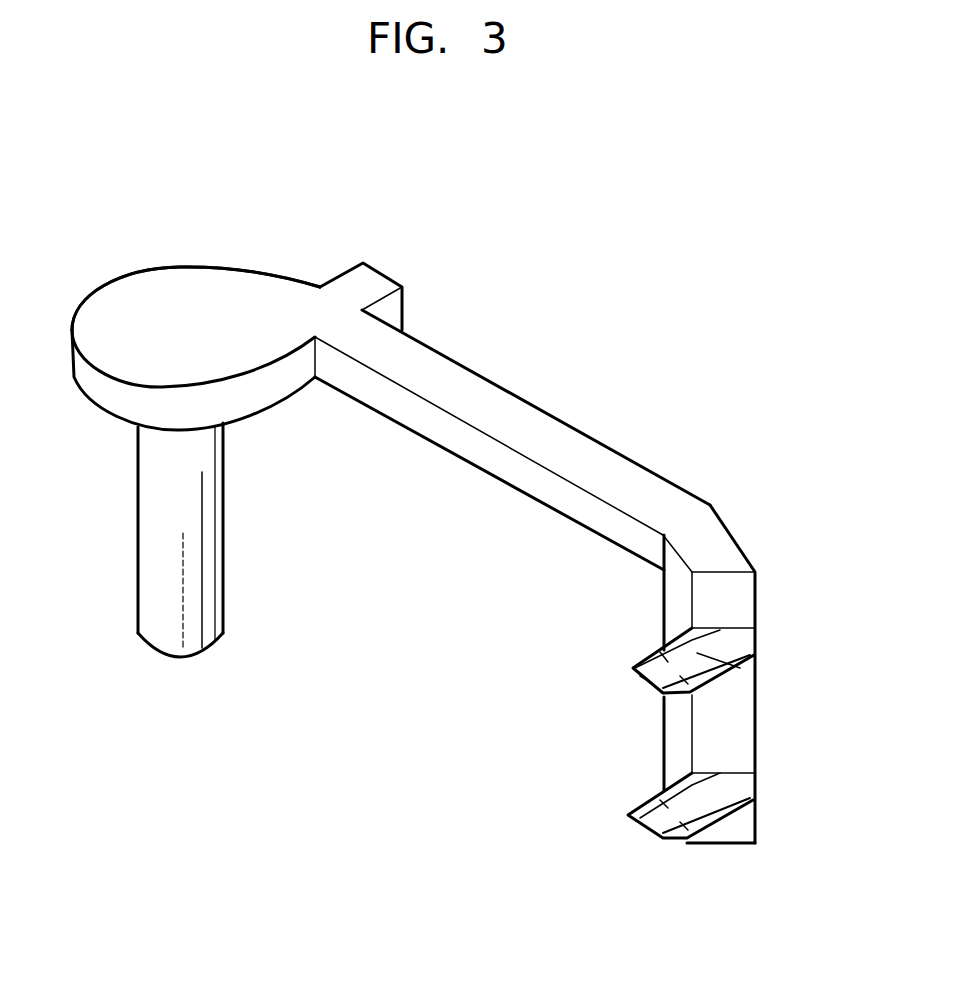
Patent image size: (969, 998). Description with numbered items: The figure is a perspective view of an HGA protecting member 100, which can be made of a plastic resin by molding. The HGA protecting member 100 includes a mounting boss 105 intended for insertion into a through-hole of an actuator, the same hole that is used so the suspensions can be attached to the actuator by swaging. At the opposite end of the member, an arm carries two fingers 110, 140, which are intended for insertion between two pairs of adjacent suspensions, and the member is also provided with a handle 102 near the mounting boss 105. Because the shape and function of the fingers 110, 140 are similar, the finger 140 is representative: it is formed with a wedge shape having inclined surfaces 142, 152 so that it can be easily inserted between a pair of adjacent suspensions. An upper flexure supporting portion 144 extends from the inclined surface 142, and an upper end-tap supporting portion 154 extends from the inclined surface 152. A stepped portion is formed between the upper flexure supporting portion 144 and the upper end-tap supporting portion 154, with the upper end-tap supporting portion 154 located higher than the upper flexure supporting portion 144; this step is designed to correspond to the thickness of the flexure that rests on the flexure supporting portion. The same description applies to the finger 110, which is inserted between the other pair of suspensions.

The HGA protecting member 100 is at (758, 477).
The handle 102 is at (357, 292).
The mounting boss 105 is at (167, 567).
The finger 110 is at (737, 795).
The finger 140 is at (715, 651).
The inclined surface 142 is at (640, 668).
The upper flexure supporting portion 144 is at (662, 652).
The inclined surface 152 is at (665, 677).
The upper end-tap supporting portion 154 is at (740, 668).